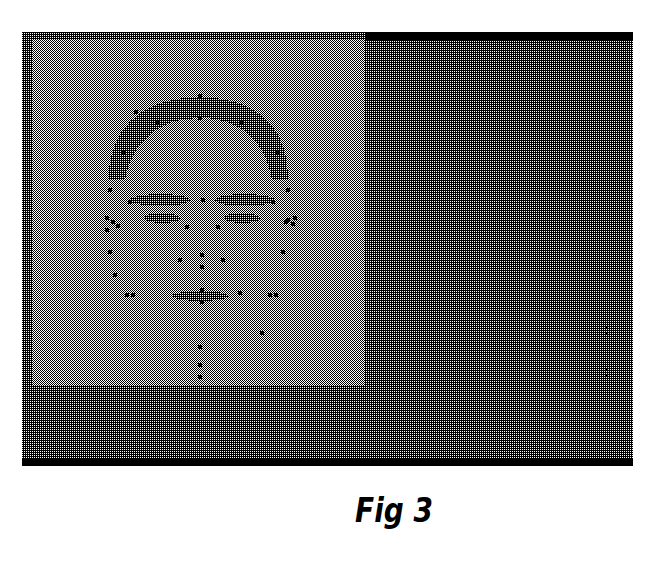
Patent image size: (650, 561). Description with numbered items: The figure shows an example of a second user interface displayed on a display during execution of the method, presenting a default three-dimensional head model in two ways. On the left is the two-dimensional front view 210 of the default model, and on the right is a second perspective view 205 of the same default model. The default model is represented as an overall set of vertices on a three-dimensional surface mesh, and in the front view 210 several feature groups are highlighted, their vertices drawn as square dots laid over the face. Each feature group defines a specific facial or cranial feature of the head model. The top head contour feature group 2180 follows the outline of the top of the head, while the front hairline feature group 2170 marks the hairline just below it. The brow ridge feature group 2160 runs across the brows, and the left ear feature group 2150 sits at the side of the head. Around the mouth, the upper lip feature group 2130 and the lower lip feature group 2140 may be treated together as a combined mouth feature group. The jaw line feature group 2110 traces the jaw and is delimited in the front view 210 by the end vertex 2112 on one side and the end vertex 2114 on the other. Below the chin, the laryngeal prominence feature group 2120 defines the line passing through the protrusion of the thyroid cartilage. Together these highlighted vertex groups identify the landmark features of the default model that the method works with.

The 2D front view 210 is at (327, 249).
The second perspective view 205 is at (499, 249).
The top head contour feature group 2180 is at (135, 110).
The front hairline feature group 2170 is at (225, 115).
The brow ridge feature group 2160 is at (233, 192).
The end vertex 2112 is at (107, 230).
The left ear feature group 2150 is at (293, 225).
The upper lip feature group 2130 is at (224, 290).
The lower lip feature group 2140 is at (230, 297).
The jaw line feature group 2110 is at (125, 296).
The end vertex 2114 is at (356, 310).
The laryngeal prominence feature group 2120 is at (240, 353).